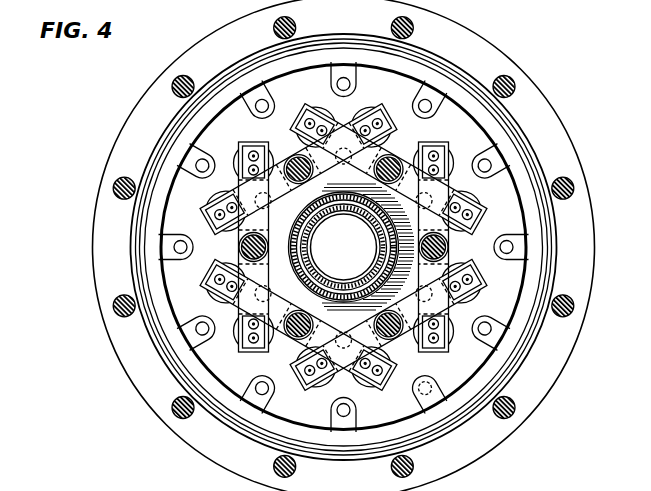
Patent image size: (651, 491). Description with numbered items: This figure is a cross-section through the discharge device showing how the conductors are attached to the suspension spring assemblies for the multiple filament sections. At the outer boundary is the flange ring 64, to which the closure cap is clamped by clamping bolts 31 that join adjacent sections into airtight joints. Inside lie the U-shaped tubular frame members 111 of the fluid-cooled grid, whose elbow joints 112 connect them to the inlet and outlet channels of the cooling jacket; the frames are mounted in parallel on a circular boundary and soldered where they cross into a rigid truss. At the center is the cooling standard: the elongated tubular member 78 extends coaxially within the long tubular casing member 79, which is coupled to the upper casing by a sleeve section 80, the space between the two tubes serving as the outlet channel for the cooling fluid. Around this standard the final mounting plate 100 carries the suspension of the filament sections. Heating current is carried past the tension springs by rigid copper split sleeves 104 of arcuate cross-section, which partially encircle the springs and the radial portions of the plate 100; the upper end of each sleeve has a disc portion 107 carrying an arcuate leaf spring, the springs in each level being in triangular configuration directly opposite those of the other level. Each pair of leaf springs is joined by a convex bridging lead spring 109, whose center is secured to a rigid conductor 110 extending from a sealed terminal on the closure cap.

The clamping bolts 31 is at (571, 180).
The flange ring 64 is at (553, 123).
The elongated tubular member 78 is at (314, 204).
The tubular casing member 79 is at (305, 211).
The sleeve section 80 is at (299, 269).
The final mounting plate 100 is at (344, 240).
The split sleeves 104 is at (247, 143).
The disc portion 107 is at (235, 170).
The bridging lead spring 109 is at (347, 128).
The rigid conductor 110 is at (417, 134).
The U-shaped tubular frame members 111 is at (431, 381).
The elbow joints 112 is at (190, 152).